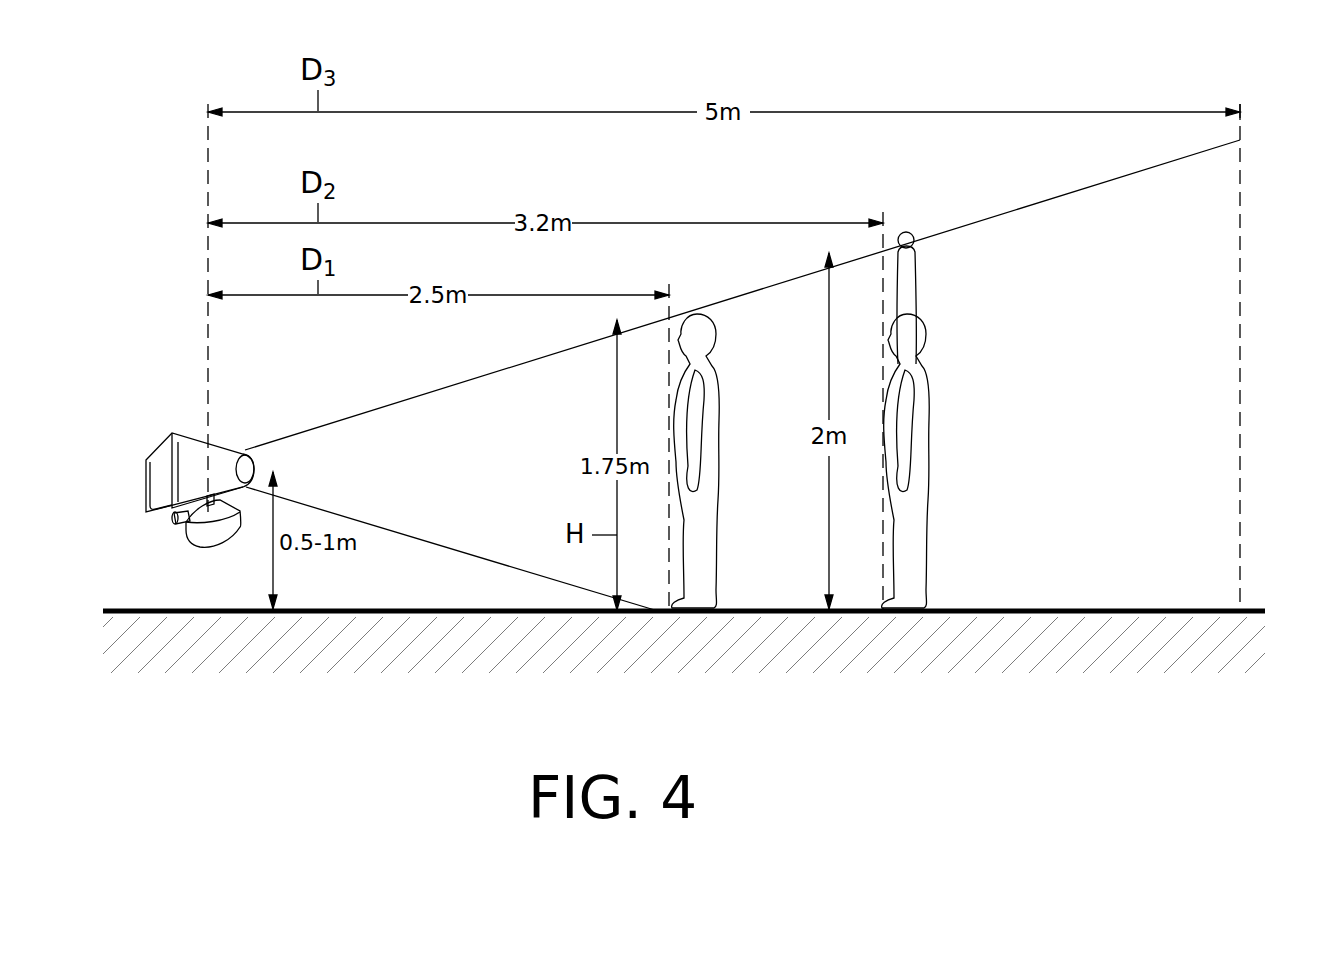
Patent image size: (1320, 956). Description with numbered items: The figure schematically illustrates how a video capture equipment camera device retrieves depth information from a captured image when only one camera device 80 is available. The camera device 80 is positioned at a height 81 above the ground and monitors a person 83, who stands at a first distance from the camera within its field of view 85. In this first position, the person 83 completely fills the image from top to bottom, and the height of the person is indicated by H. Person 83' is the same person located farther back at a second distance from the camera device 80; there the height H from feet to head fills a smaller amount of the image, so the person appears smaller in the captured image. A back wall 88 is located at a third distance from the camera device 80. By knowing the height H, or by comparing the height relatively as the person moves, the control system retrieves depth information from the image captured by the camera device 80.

The camera device 80 is at (158, 440).
The height above the ground 81 is at (273, 575).
The person 83 is at (722, 461).
The person in second position 83' is at (937, 420).
The field of view 85 is at (424, 393).
The back wall 88 is at (1241, 319).